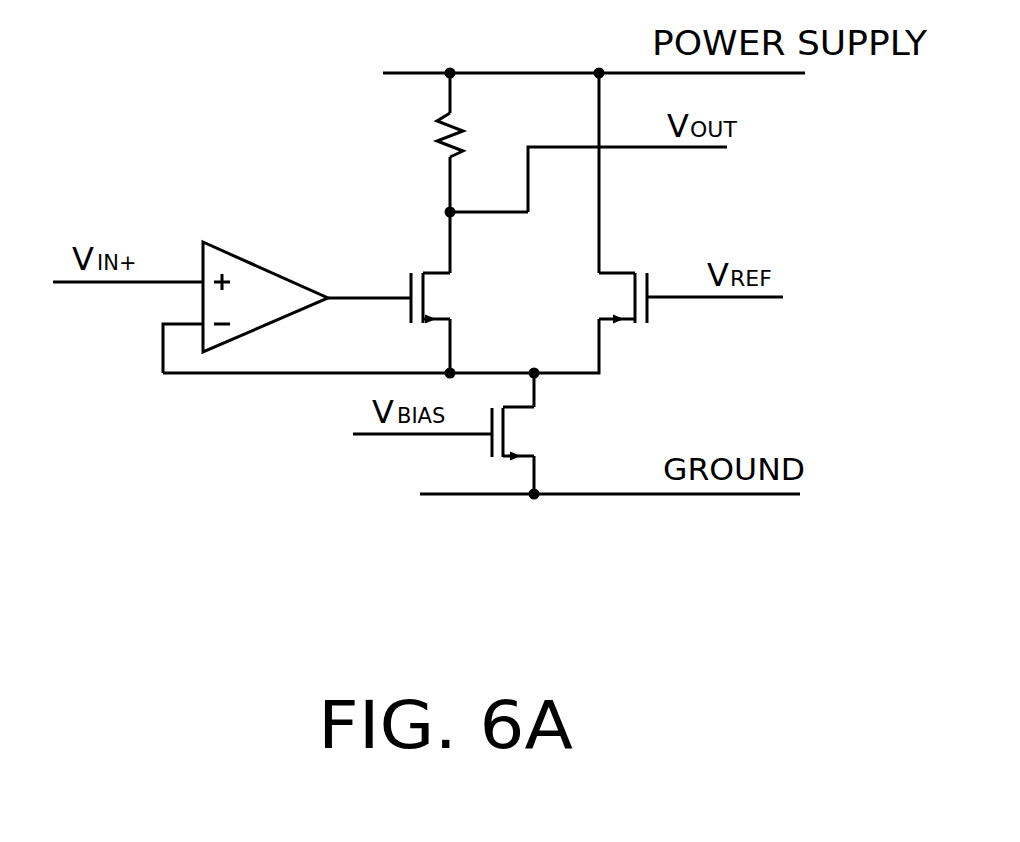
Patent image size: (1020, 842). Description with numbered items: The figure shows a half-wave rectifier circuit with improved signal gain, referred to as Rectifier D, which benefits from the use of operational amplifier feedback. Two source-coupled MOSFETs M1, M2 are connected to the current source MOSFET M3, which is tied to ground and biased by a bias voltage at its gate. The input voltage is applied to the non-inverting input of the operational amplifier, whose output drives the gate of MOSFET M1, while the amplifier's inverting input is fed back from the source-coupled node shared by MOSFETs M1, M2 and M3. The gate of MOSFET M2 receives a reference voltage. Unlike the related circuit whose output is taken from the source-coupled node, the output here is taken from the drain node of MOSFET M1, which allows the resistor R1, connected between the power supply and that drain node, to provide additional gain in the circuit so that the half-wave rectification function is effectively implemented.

The resistor R1 is at (475, 117).
The source-coupled MOSFET M1 is at (459, 298).
The source-coupled MOSFET M2 is at (615, 298).
The current source MOSFET M3 is at (542, 434).